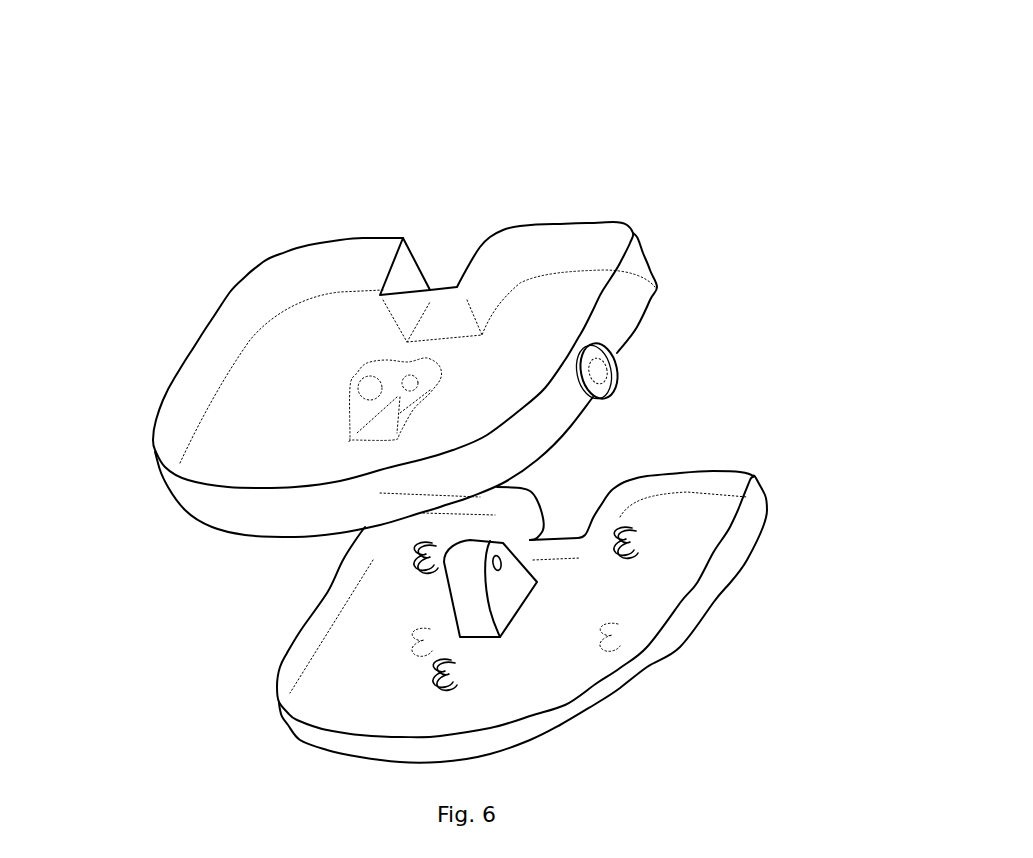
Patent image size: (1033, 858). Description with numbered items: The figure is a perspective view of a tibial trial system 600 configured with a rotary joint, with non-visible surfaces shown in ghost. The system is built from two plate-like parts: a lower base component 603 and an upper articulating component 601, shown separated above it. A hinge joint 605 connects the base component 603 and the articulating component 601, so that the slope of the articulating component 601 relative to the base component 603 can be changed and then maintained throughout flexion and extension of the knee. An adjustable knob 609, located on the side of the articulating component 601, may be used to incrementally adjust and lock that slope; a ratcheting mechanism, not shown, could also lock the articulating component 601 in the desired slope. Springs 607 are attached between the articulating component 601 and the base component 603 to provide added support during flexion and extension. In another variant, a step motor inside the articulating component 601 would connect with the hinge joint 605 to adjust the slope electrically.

The tibial trial system 600 is at (732, 110).
The articulating component 601 is at (190, 353).
The base component 603 is at (280, 663).
The hinge joint 605 is at (510, 572).
The springs 607 is at (638, 540).
The adjustable knob 609 is at (614, 353).